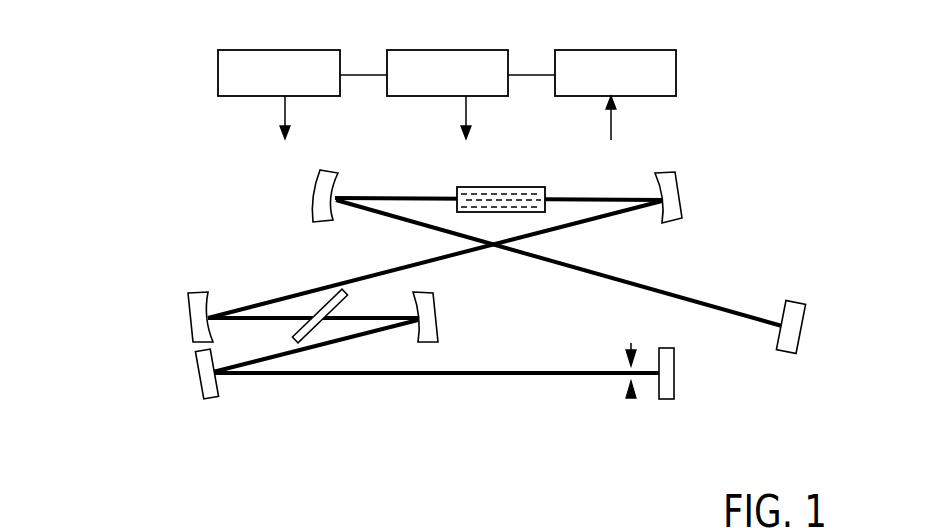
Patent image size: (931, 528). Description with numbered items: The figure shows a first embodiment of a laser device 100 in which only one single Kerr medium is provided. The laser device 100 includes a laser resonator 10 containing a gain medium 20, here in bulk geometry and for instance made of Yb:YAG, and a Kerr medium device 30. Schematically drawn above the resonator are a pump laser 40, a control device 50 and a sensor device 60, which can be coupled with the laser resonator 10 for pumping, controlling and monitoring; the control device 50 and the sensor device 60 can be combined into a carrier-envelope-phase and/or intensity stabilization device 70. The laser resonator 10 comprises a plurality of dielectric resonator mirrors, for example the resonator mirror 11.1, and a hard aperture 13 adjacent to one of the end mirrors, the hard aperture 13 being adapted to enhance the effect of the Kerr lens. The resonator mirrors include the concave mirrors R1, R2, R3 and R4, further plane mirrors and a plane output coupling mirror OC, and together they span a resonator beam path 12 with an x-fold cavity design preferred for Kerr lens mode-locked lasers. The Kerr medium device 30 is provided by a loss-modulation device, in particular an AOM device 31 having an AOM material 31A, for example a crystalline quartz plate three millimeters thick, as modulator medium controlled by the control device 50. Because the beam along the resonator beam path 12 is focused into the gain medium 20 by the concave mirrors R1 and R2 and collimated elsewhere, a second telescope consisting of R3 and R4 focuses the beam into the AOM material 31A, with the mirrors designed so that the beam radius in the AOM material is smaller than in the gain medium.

The laser device 100 is at (143, 101).
The laser resonator 10 is at (110, 152).
The pump laser 40 is at (302, 94).
The control device 50 is at (471, 94).
The sensor device 60 is at (615, 95).
The carrier-envelope-phase and/or intensity stabilization device 70 is at (387, 45).
The gain medium 20 is at (488, 189).
The AOM material 31A is at (320, 297).
The Kerr medium device 30 is at (278, 407).
The AOM device 31 is at (353, 403).
The resonator beam path 12 is at (490, 375).
The hard aperture 13 is at (631, 399).
The resonator mirror 11.1 is at (776, 380).
The output coupling mirror OC is at (809, 326).
The concave mirror R1 is at (311, 191).
The concave mirror R2 is at (679, 191).
The concave mirror R3 is at (190, 303).
The concave mirror R4 is at (444, 317).